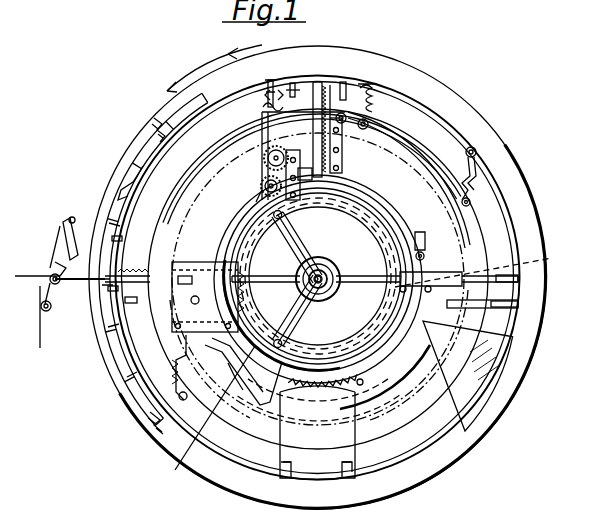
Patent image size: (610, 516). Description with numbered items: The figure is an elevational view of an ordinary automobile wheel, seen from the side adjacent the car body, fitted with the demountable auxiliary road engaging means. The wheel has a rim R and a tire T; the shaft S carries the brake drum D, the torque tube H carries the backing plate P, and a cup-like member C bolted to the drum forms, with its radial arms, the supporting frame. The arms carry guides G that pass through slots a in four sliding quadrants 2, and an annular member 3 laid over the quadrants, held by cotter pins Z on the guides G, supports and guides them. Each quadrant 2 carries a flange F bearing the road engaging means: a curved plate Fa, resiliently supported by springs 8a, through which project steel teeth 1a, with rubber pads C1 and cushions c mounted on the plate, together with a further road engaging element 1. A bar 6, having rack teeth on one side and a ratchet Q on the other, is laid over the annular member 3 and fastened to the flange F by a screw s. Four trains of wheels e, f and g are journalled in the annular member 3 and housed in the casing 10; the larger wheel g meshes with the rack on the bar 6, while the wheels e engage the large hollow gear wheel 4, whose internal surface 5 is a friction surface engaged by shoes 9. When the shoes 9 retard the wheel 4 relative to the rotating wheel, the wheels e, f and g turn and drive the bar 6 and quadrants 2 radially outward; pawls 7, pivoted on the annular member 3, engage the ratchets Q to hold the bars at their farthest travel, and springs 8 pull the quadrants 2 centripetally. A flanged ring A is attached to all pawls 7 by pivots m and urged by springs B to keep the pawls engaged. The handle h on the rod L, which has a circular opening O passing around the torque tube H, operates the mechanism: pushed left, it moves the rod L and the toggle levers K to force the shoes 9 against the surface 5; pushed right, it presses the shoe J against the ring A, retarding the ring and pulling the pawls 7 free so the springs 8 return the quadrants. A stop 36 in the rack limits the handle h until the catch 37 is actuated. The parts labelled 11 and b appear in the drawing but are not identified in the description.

The road engaging element 1 is at (357, 448).
The quadrant 2 is at (505, 364).
The annular member 3 is at (135, 200).
The large gear wheel 4 is at (362, 386).
The internal friction surface 5 is at (372, 379).
The bar 6 is at (302, 76).
The pawl 7 is at (338, 108).
The spring 8 is at (365, 94).
The spring 8a is at (152, 420).
The shoe 9 is at (292, 290).
The casing 10 is at (188, 341).
The arm 11 is at (358, 114).
The stop 36 is at (43, 324).
The catch 37 is at (57, 258).
The teeth 1a is at (116, 321).
The flanged ring A is at (409, 175).
The spring B is at (466, 163).
The cup-like member C is at (270, 392).
The rubber pad C1 is at (125, 173).
The brake drum D is at (377, 230).
The flange F is at (165, 330).
The curved plate Fa is at (143, 166).
The guide G is at (519, 303).
The torque tube H is at (318, 296).
The shoe J is at (444, 273).
The lever K is at (277, 279).
The rod L is at (190, 292).
The circular opening O is at (335, 274).
The backing plate P is at (250, 370).
The ratchet Q is at (359, 129).
The rim R is at (206, 418).
The shaft S is at (325, 266).
The tire T is at (150, 148).
The cotter pin Z is at (283, 81).
The slot a is at (492, 307).
The block b is at (338, 388).
The cushion c is at (357, 478).
The wheel e is at (264, 192).
The wheel f is at (268, 172).
The wheel g is at (288, 150).
The handle h is at (64, 237).
The pivot m is at (345, 118).
The screw s is at (318, 82).